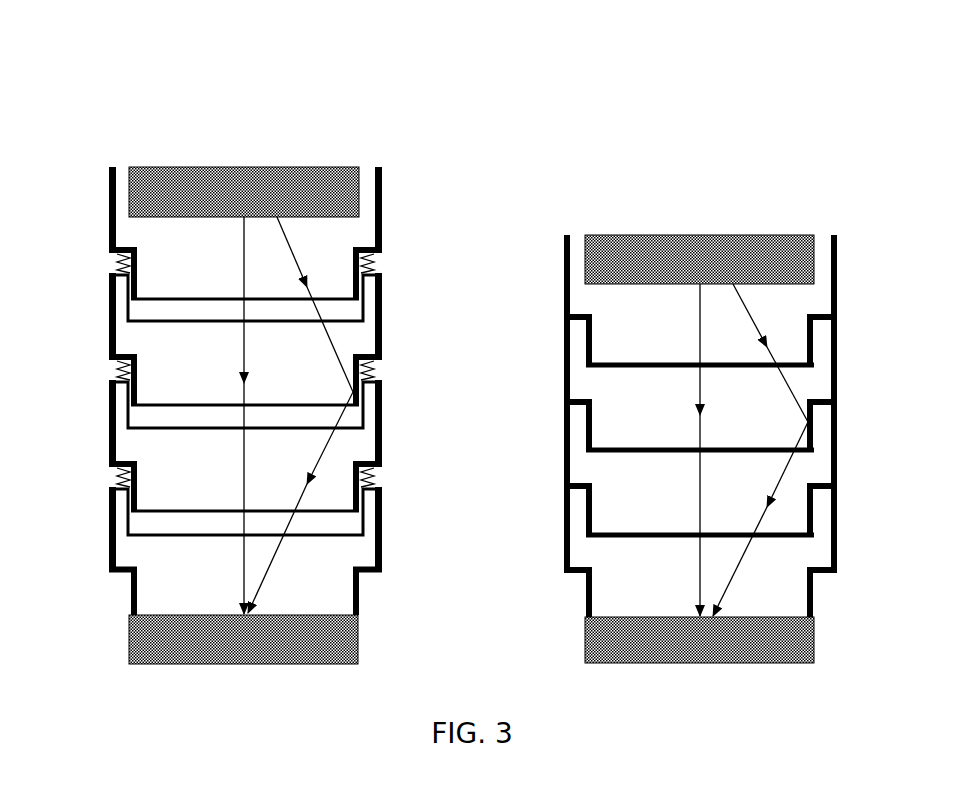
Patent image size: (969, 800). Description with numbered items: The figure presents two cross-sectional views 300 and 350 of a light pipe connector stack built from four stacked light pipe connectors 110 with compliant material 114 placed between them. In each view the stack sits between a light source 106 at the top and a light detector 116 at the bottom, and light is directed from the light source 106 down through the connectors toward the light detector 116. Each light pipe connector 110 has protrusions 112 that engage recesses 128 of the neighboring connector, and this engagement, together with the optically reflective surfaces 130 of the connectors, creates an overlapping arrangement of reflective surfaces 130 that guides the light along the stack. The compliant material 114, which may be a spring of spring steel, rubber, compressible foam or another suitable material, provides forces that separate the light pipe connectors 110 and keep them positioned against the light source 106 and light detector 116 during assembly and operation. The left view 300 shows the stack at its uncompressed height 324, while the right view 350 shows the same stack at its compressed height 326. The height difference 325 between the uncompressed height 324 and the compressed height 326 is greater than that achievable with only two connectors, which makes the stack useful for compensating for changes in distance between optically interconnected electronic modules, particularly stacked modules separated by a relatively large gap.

The light source 106 is at (227, 202).
The light pipe connector 110 is at (187, 608).
The protrusion 112 is at (331, 270).
The compliant material 114 is at (108, 483).
The light detector 116 is at (227, 649).
The recess 128 is at (231, 533).
The optically reflective surface 130 is at (353, 396).
The cross-sectional view 300 is at (190, 126).
The cross-sectional view 350 is at (640, 126).
The uncompressed height 324 is at (547, 168).
The height difference 325 is at (523, 168).
The compressed height 326 is at (533, 235).